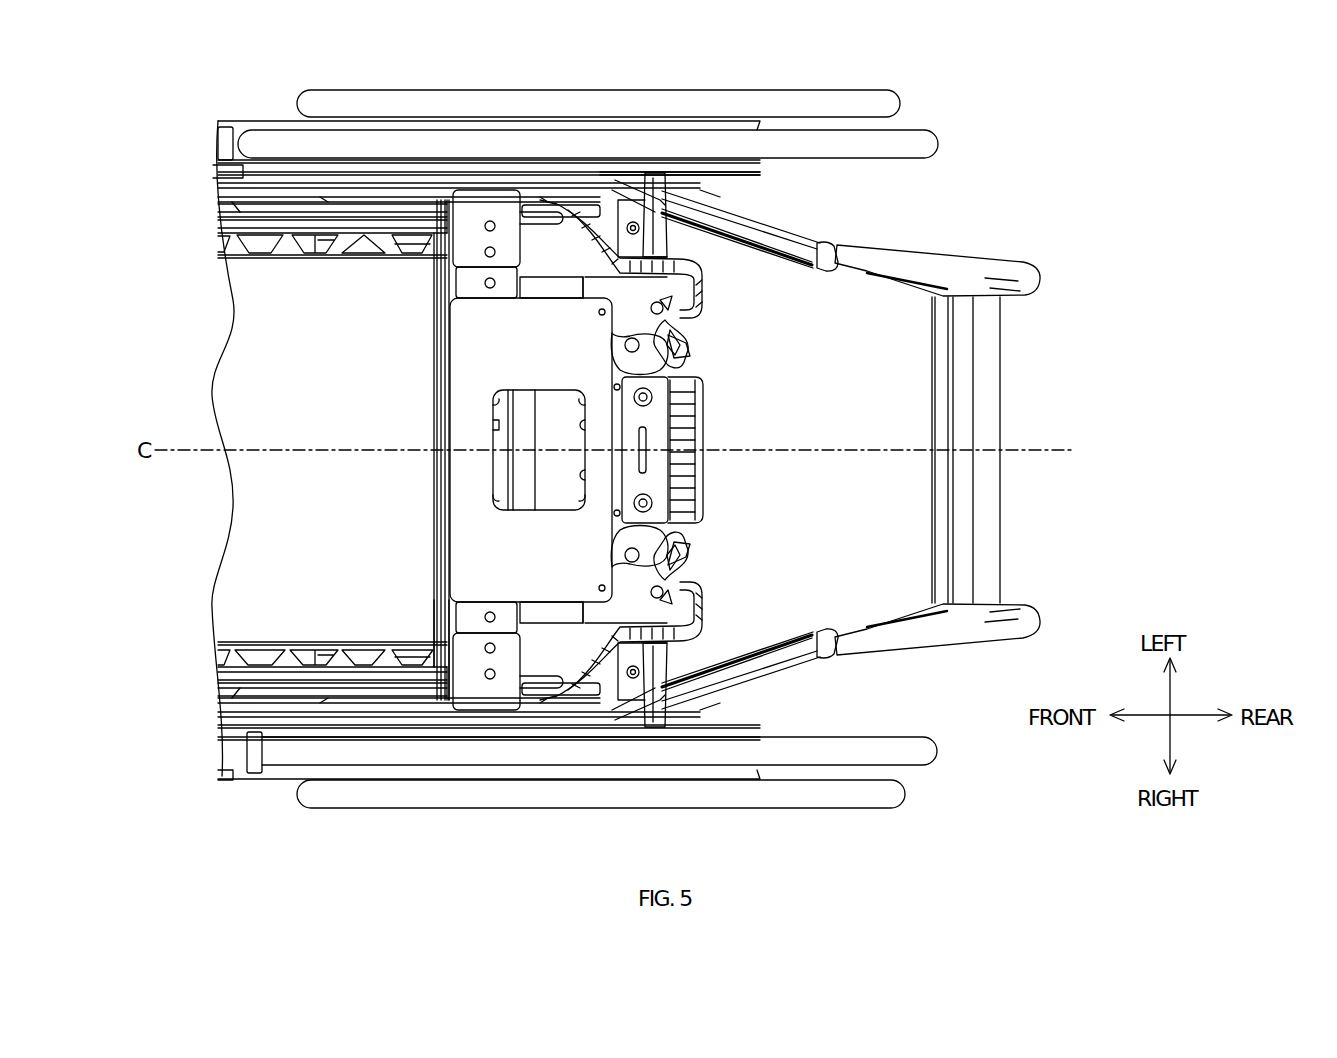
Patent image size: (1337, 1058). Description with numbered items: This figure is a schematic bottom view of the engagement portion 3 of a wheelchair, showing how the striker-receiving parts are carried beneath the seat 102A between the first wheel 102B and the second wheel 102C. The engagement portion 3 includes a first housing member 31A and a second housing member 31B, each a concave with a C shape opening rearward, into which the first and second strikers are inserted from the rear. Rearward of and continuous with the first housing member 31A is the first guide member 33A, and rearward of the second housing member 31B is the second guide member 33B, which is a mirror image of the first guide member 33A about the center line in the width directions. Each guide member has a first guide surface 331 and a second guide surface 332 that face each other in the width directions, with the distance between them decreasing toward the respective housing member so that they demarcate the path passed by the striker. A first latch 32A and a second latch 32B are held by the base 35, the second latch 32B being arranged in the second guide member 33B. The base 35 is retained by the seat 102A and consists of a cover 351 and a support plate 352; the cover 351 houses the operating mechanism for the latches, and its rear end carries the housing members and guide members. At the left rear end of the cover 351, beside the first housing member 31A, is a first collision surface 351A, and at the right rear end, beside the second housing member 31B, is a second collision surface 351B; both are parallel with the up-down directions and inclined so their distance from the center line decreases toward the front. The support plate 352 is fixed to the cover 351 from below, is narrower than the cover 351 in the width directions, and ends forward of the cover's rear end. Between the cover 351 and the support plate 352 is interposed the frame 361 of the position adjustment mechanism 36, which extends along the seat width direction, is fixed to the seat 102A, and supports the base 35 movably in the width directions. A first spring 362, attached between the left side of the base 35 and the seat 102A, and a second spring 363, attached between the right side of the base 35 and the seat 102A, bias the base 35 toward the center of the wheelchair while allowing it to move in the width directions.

The engagement portion 3 is at (712, 425).
The first housing member 31A is at (700, 265).
The second housing member 31B is at (695, 612).
The first latch 32A is at (693, 330).
The second latch 32B is at (693, 570).
The first guide member 33A is at (712, 366).
The second guide member 33B is at (712, 534).
The first guide surface 331 is at (690, 330).
The second guide surface 332 is at (692, 350).
The base 35 is at (759, 521).
The cover 351 is at (622, 205).
The first collision surface 351A is at (660, 210).
The second collision surface 351B is at (660, 700).
The support plate 352 is at (557, 580).
The position adjustment mechanism 36 is at (490, 730).
The frame 361 is at (482, 620).
The first spring 362 is at (440, 267).
The second spring 363 is at (440, 636).
The seat 102A is at (908, 382).
The first wheel 102B is at (930, 142).
The second wheel 102C is at (928, 782).